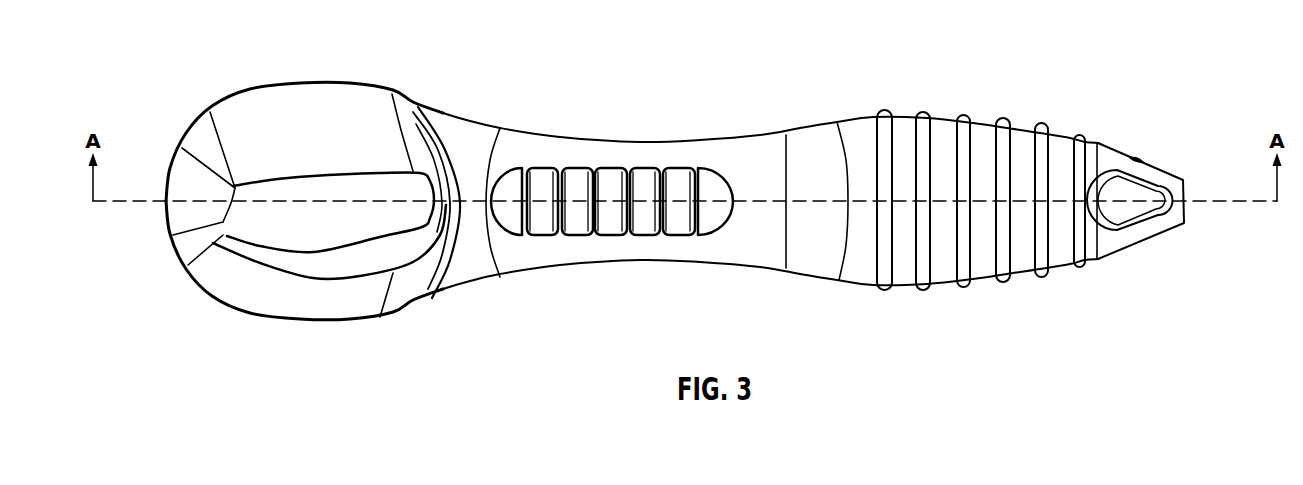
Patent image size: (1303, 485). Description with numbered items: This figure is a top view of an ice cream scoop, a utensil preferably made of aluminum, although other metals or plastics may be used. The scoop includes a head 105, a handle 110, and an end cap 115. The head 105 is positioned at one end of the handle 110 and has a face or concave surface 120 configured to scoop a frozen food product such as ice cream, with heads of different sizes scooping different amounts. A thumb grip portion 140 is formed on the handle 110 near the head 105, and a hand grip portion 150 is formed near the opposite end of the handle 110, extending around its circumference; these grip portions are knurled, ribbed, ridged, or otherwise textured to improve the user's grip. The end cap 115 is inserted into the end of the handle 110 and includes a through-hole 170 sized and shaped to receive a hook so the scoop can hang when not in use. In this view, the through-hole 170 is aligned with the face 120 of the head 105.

The head 105 is at (402, 97).
The handle 110 is at (612, 163).
The end cap 115 is at (1175, 212).
The face 120 is at (290, 100).
The thumb grip portion 140 is at (613, 190).
The hand grip portion 150 is at (963, 287).
The through-hole 170 is at (1142, 213).